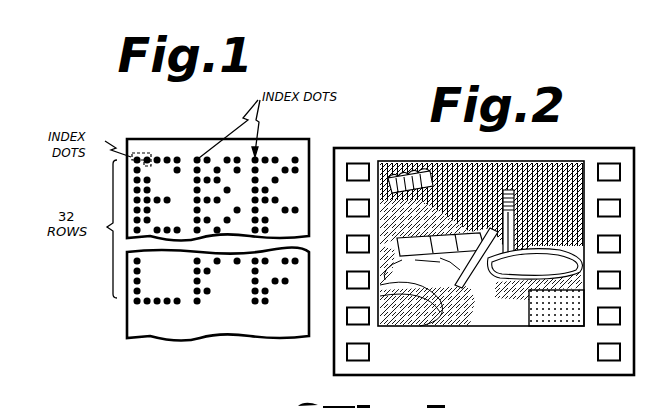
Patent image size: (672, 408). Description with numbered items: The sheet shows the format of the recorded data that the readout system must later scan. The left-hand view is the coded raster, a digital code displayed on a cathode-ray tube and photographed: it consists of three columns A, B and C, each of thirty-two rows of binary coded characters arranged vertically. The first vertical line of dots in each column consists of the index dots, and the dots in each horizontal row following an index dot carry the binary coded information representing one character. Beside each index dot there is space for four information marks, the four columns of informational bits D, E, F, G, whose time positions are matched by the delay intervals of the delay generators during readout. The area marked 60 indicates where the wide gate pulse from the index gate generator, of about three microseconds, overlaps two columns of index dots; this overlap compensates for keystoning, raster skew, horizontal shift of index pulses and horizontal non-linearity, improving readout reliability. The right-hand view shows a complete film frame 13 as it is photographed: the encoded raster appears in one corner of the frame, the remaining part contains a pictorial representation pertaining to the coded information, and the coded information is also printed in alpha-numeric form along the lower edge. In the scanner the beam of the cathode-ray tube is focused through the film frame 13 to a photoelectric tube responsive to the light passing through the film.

In FIG. 1, the wide gate pulse overlap region 60 is at (139, 153).
In FIG. 2, the film frame 13 is at (641, 252).
In FIG. 1, the first column A is at (187, 124).
In FIG. 1, the second column B is at (247, 124).
In FIG. 1, the third column C is at (308, 124).
In FIG. 1, the first column of informational bits D is at (137, 304).
In FIG. 1, the second column of informational bits E is at (148, 304).
In FIG. 1, the third column of informational bits F is at (166, 304).
In FIG. 1, the fourth column of informational bits G is at (178, 304).